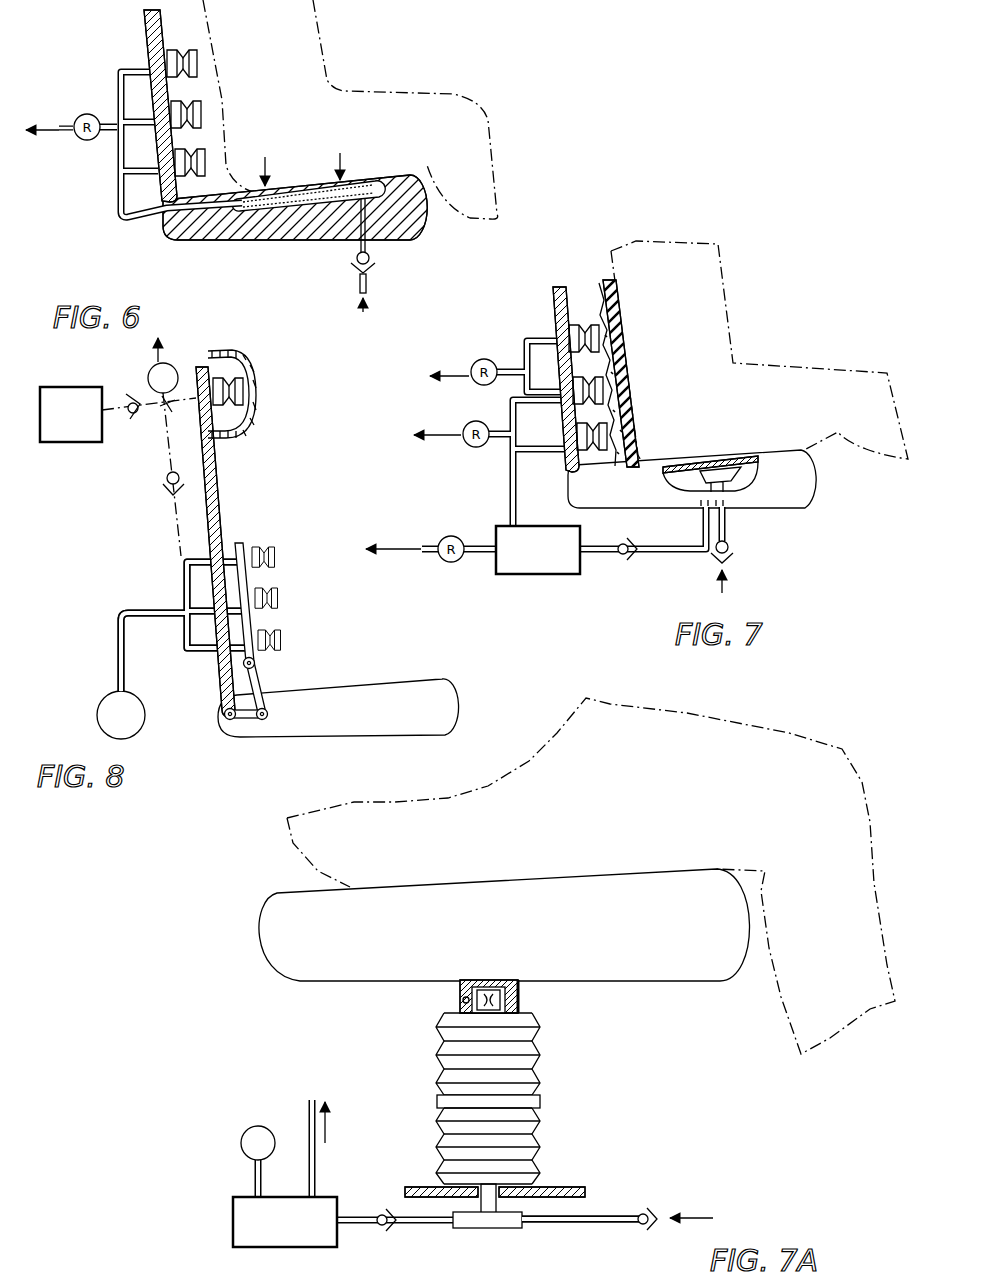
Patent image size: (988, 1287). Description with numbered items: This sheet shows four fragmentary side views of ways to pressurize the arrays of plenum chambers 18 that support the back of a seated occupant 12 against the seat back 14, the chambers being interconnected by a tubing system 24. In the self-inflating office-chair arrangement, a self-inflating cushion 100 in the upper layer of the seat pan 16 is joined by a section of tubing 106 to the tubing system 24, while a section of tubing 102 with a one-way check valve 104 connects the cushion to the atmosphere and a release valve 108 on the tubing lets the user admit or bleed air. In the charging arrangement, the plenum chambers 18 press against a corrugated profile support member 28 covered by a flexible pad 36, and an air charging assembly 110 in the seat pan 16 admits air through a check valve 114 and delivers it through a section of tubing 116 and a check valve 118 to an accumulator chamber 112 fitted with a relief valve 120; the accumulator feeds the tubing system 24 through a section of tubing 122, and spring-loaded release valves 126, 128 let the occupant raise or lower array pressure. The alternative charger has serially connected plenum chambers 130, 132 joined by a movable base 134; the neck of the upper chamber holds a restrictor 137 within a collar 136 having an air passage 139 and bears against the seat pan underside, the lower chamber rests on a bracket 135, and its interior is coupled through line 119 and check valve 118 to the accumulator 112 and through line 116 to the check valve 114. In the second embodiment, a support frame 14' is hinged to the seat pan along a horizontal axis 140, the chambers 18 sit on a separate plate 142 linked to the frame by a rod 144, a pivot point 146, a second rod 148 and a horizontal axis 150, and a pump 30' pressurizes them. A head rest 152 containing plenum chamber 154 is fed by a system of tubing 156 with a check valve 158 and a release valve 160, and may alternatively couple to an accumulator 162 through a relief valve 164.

In FIG. 6, the occupant 12 is at (297, 30).
In FIG. 7, the occupant 12 is at (729, 302).
In FIG. 7A, the occupant 12 is at (591, 876).
In FIG. 6, the seat back 14 is at (184, 105).
In FIG. 7, the seat back 14 is at (564, 361).
In FIG. 8, the support frame 14' is at (290, 542).
In FIG. 6, the seat pan 16 is at (238, 232).
In FIG. 7, the seat pan 16 is at (826, 500).
In FIG. 8, the seat pan 16 is at (440, 684).
In FIG. 7A, the seat pan 16 is at (283, 914).
In FIG. 6, the plenum chambers 18 is at (176, 50).
In FIG. 7, the plenum chambers 18 is at (571, 330).
In FIG. 8, the plenum chambers 18 is at (276, 554).
In FIG. 6, the tubing system 24 is at (119, 190).
In FIG. 7, the tubing system 24 is at (527, 346).
In FIG. 8, the tubing system 24 is at (184, 580).
In FIG. 7, the profile support member 28 is at (598, 300).
In FIG. 8, the pump 30' is at (155, 650).
In FIG. 7, the flexible pad 36 is at (618, 286).
In FIG. 6, the self-inflating cushion 100 is at (296, 207).
In FIG. 6, the section of tubing 102 is at (357, 256).
In FIG. 6, the one-way check valve 104 is at (377, 262).
In FIG. 6, the section of tubing 106 is at (192, 230).
In FIG. 6, the release valve 108 is at (96, 112).
In FIG. 7, the air charging assembly 110 is at (691, 476).
In FIG. 7A, the air charging assembly 110 is at (556, 1090).
In FIG. 7, the accumulator chamber 112 is at (538, 550).
In FIG. 7A, the accumulator chamber 112 is at (286, 1151).
In FIG. 7, the check valve 114 is at (735, 556).
In FIG. 7A, the check valve 114 is at (659, 1229).
In FIG. 7, the section of tubing 116 is at (673, 556).
In FIG. 7A, the section of tubing 116 is at (562, 1227).
In FIG. 7, the check valve 118 is at (626, 560).
In FIG. 7A, the check valve 118 is at (389, 1233).
In FIG. 7A, the line 119 is at (425, 1229).
In FIG. 7, the relief valve 120 is at (447, 537).
In FIG. 7A, the relief valve 120 is at (241, 1146).
In FIG. 7, the section of tubing 122 is at (509, 492).
In FIG. 7, the spring-loaded release valve 126 is at (472, 423).
In FIG. 7, the spring-loaded release valve 128 is at (478, 361).
In FIG. 7A, the plenum chamber 130 is at (441, 1059).
In FIG. 7A, the plenum chamber 132 is at (443, 1136).
In FIG. 7A, the base 134 is at (440, 1101).
In FIG. 7A, the bracket 135 is at (425, 1189).
In FIG. 7A, the collar 136 is at (520, 1010).
In FIG. 7A, the restrictor 137 is at (518, 996).
In FIG. 7A, the air passage 139 is at (462, 1001).
In FIG. 8, the horizontal axis 140 is at (226, 718).
In FIG. 8, the plate 142 is at (240, 543).
In FIG. 8, the rod 144 is at (236, 721).
In FIG. 8, the pivot point 146 is at (268, 714).
In FIG. 8, the second rod 148 is at (266, 692).
In FIG. 8, the horizontal axis 150 is at (256, 662).
In FIG. 8, the head rest 152 is at (248, 360).
In FIG. 8, the plenum chamber 154 is at (237, 432).
In FIG. 8, the system of tubing 156 is at (171, 520).
In FIG. 8, the check valve 158 is at (166, 483).
In FIG. 8, the release valve 160 is at (150, 379).
In FIG. 8, the accumulator 162 is at (71, 414).
In FIG. 8, the relief valve 164 is at (136, 416).